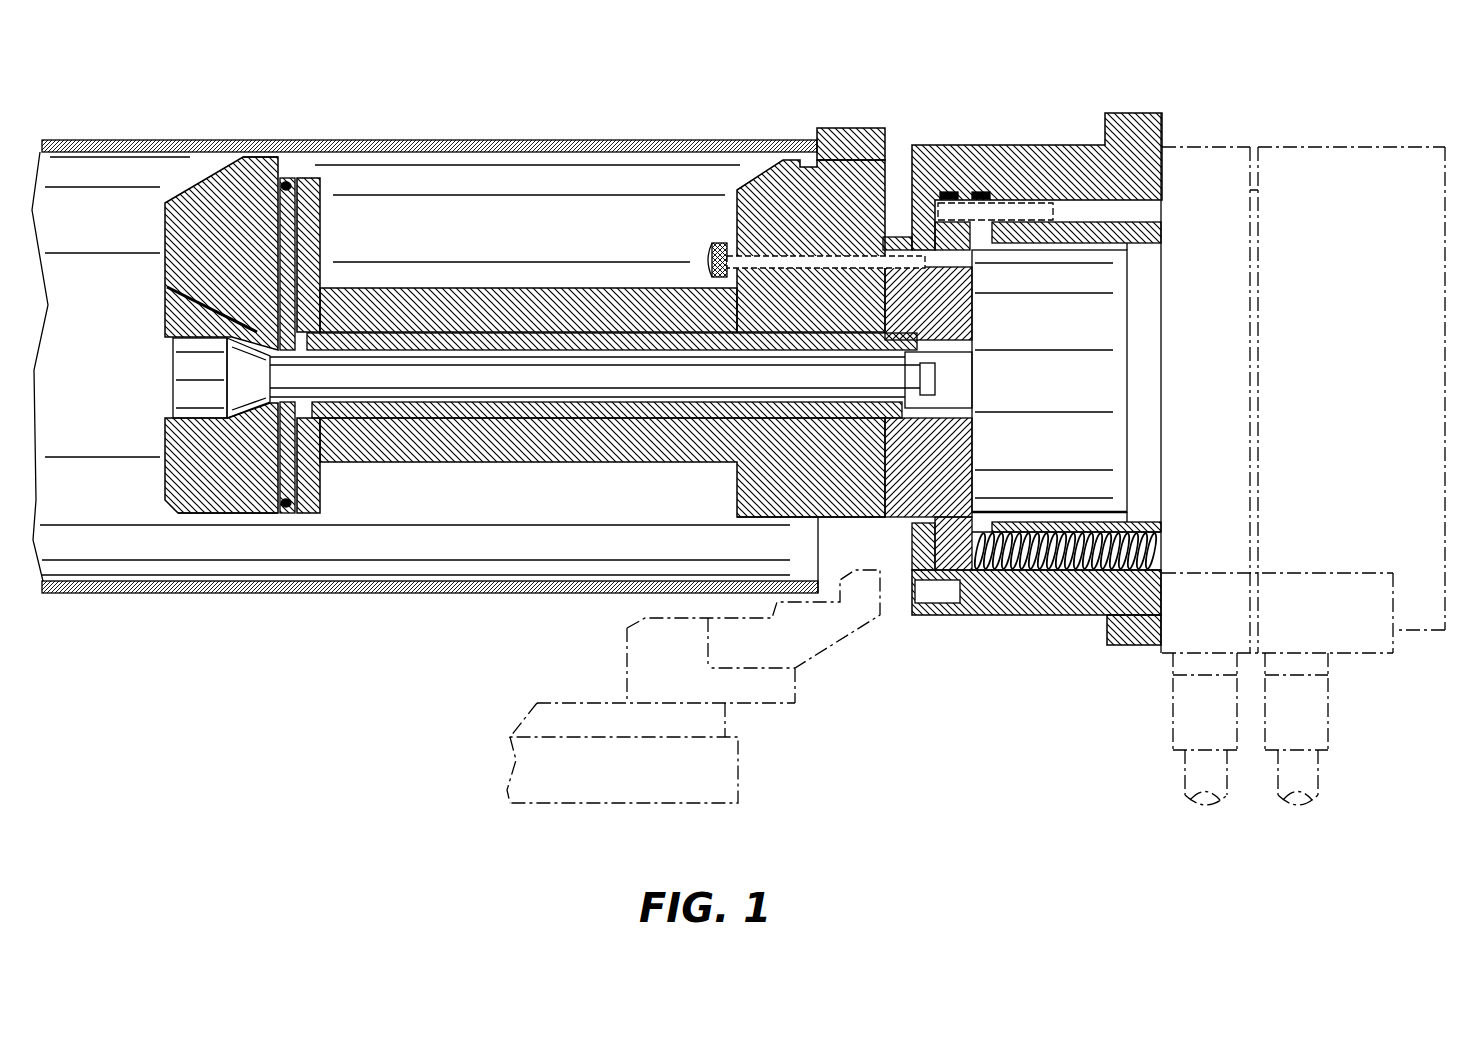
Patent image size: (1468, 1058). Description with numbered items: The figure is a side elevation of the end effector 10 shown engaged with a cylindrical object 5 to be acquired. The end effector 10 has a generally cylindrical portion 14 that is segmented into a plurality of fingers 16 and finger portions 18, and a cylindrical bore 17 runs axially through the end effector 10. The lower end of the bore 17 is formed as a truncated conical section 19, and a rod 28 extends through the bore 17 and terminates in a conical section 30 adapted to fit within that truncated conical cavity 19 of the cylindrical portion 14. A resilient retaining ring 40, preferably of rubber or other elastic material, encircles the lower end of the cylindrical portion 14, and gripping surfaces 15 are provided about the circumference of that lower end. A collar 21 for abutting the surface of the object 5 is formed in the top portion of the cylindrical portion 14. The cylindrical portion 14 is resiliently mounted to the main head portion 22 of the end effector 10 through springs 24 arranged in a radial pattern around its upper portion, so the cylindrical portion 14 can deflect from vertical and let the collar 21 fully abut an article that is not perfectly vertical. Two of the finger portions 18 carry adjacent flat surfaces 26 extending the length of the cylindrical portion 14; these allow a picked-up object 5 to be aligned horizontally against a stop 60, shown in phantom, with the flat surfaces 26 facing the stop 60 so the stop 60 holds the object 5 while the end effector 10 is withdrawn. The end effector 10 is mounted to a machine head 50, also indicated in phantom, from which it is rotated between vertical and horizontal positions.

The cylindrical object 5 is at (95, 140).
The end effector 10 is at (515, 650).
The cylindrical portion 14 is at (565, 455).
The gripping surfaces 15 is at (258, 160).
The fingers 16 is at (205, 195).
The cylindrical bore 17 is at (445, 420).
The finger portions 18 is at (263, 513).
The truncated conical section 19 is at (167, 287).
The collar 21 is at (815, 130).
The main head portion 22 is at (1137, 630).
The springs 24 is at (1037, 570).
The flat surfaces 26 is at (203, 513).
The rod 28 is at (392, 373).
The conical section 30 is at (190, 382).
The resilient retaining ring 40 is at (290, 175).
The machine head 50 is at (1220, 160).
The stop 60 is at (762, 748).